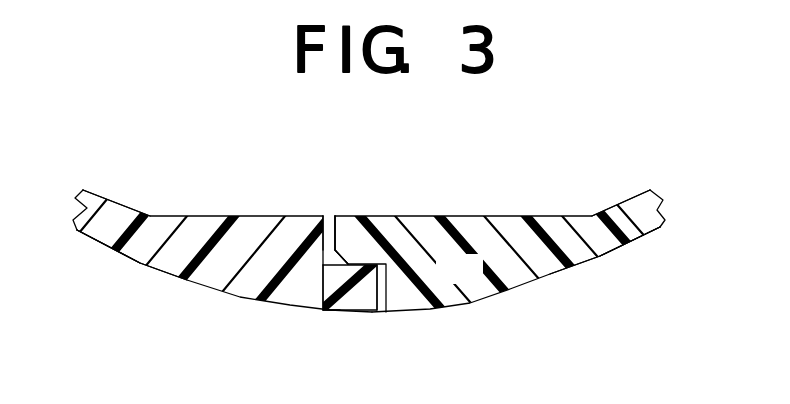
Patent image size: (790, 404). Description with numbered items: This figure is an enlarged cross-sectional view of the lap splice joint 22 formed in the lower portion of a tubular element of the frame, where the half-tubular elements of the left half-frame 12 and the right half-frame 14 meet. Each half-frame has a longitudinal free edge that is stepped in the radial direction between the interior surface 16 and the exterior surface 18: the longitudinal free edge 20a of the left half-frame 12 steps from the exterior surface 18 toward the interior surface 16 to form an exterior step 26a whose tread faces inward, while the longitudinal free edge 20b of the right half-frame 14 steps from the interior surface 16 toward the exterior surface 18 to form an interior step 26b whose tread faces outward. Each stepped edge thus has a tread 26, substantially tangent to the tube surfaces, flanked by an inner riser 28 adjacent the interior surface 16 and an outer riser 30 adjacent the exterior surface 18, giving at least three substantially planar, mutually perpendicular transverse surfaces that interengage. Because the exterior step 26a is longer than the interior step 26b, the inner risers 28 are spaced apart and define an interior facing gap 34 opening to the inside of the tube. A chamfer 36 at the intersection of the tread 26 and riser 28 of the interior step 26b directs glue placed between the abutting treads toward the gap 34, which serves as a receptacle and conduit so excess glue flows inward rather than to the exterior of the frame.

The left half-frame 12 is at (75, 228).
The right half-frame 14 is at (648, 232).
The interior surface 16 is at (105, 216).
The exterior surface 18 is at (127, 258).
The longitudinal free edge of left half-frame 20a is at (293, 245).
The longitudinal free edge of right half-frame 20b is at (405, 295).
The lap splice joint 22 is at (383, 315).
The tread 26 is at (378, 242).
The exterior step 26a is at (344, 309).
The interior step 26b is at (352, 233).
The inner riser 28 is at (337, 233).
The outer riser 30 is at (386, 283).
The interior facing gap 34 is at (316, 250).
The chamfer 36 is at (312, 308).